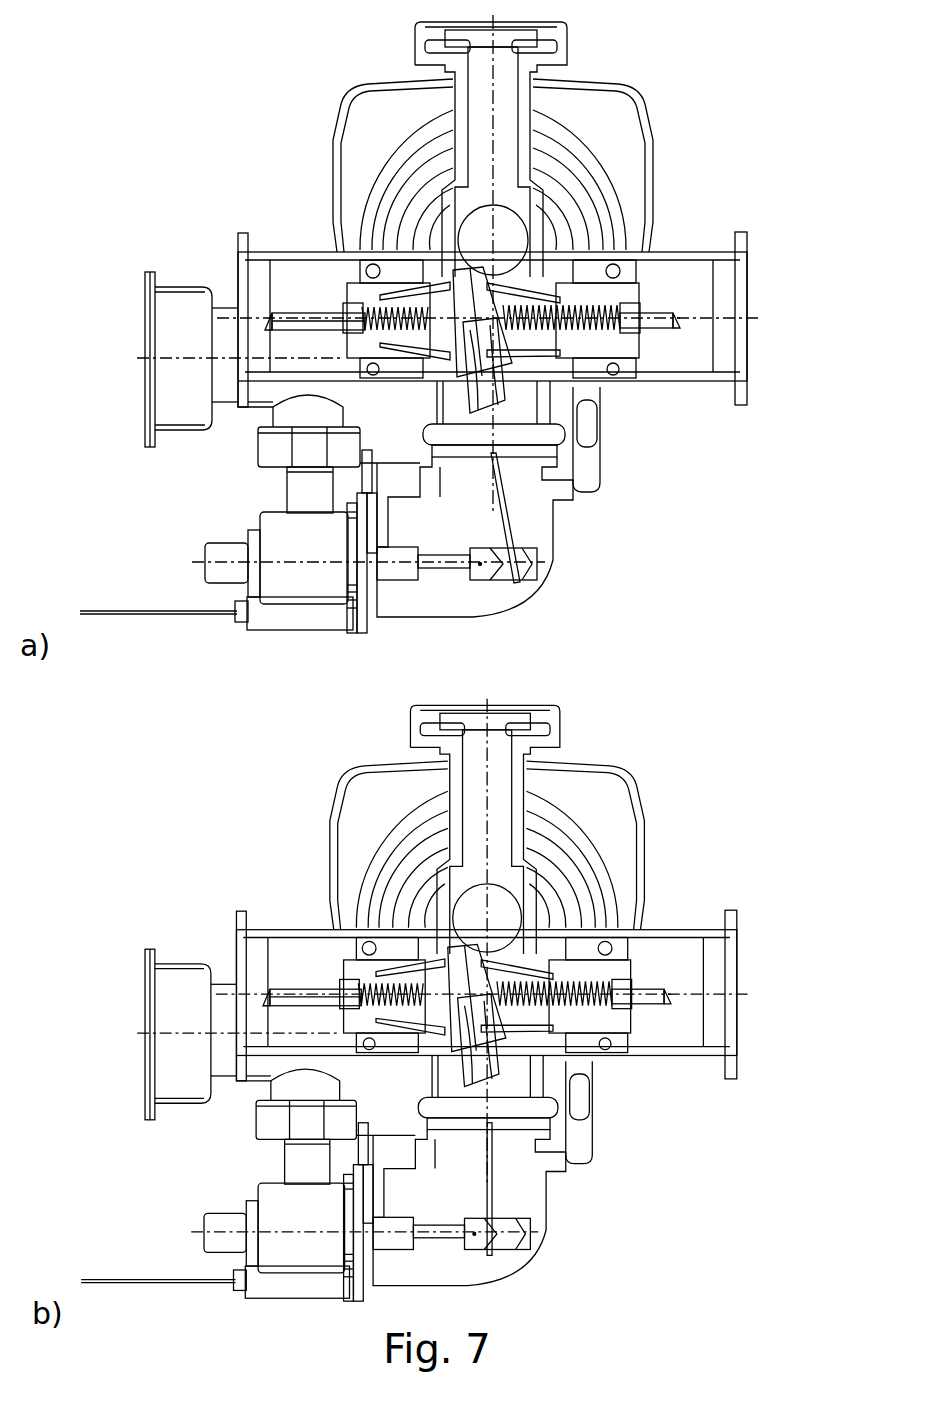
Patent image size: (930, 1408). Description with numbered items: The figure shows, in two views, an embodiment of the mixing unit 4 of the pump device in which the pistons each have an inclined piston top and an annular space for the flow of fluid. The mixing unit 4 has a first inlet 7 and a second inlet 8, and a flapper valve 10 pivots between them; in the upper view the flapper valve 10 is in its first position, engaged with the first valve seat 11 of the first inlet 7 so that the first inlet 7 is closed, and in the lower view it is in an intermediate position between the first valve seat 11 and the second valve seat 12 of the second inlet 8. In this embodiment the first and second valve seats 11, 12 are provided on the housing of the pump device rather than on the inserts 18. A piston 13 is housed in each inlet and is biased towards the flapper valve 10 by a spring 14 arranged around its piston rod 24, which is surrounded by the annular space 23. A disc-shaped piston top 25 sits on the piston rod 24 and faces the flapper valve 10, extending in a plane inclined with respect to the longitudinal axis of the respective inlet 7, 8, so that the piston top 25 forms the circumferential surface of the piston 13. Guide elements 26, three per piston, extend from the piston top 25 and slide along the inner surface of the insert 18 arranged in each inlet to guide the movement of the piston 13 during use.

The mixing unit 4 is at (690, 170).
The first inlet 7 is at (293, 285).
The second inlet 8 is at (685, 282).
The flapper valve 10 is at (485, 393).
The first valve seat 11 is at (452, 278).
The second valve seat 12 is at (531, 278).
The piston 13 is at (592, 343).
The spring 14 is at (377, 320).
The insert 18 is at (357, 362).
The annular space 23 is at (383, 336).
The piston rod 24 is at (330, 318).
The piston top 25 is at (592, 346).
The guide element 26 is at (543, 350).